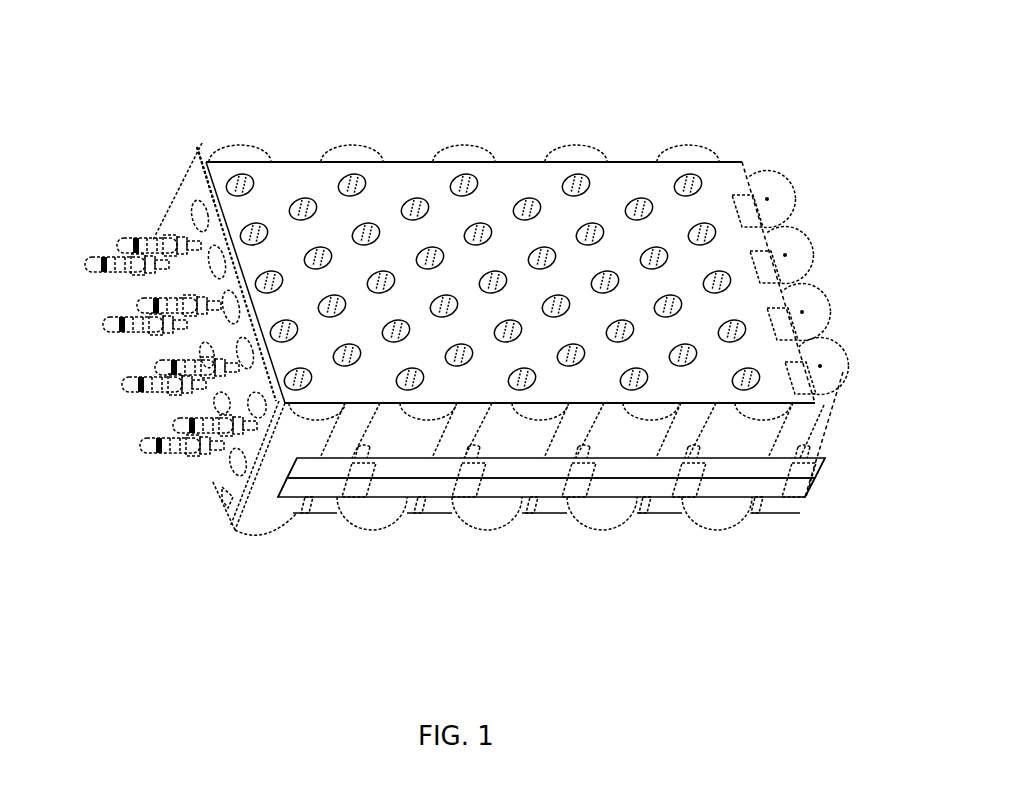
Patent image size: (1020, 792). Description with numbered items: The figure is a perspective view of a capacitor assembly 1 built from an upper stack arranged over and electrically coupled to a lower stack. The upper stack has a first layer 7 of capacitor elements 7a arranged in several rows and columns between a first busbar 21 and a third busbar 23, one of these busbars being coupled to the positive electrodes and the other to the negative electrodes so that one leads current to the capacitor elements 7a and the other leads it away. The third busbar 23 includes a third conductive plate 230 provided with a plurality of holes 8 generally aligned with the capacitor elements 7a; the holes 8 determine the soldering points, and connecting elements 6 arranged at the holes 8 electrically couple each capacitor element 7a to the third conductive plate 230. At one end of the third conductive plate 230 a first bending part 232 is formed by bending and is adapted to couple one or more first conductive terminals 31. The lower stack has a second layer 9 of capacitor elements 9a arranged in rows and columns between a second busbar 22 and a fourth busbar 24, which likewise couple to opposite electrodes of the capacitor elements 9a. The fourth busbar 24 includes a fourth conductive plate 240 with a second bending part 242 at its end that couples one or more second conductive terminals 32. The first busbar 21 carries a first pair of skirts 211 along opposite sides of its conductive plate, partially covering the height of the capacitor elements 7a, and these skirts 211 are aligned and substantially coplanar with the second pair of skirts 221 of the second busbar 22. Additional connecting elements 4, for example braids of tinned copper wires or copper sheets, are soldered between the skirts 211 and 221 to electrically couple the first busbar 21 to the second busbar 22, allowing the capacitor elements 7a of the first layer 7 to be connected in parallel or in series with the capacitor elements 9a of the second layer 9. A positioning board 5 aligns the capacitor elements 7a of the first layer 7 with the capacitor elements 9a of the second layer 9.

The capacitor assembly 1 is at (218, 44).
The third busbar 23 is at (522, 156).
The third conductive plate 230 is at (512, 181).
The first bending part 232 is at (205, 172).
The connecting element 6 is at (300, 200).
The hole 8 is at (352, 188).
The first layer 7 is at (782, 168).
The capacitor element 7a is at (785, 205).
The positioning board 5 is at (185, 185).
The first conductive terminal 31 is at (125, 238).
The second conductive terminal 32 is at (88, 257).
The second layer 9 is at (700, 530).
The capacitor element 9a is at (603, 522).
The first busbar 21 is at (826, 448).
The second busbar 22 is at (810, 507).
The first pair of skirts 211 is at (325, 472).
The second pair of skirts 221 is at (755, 497).
The additional connecting element 4 is at (815, 472).
The fourth busbar 24 is at (541, 522).
The fourth conductive plate 240 is at (663, 512).
The second bending part 242 is at (226, 486).